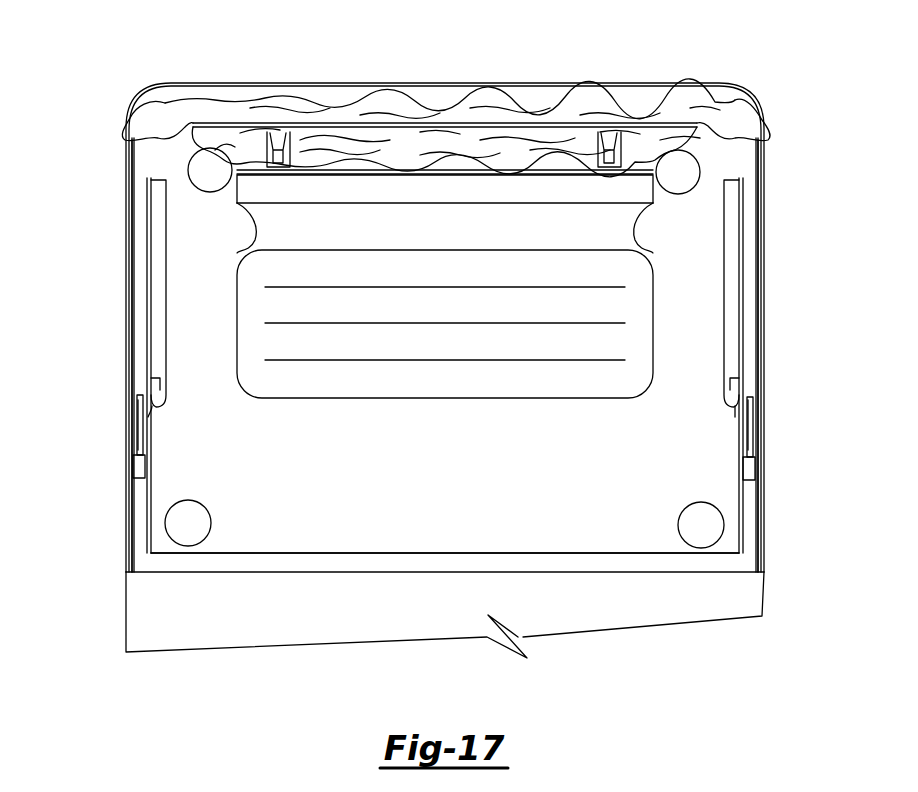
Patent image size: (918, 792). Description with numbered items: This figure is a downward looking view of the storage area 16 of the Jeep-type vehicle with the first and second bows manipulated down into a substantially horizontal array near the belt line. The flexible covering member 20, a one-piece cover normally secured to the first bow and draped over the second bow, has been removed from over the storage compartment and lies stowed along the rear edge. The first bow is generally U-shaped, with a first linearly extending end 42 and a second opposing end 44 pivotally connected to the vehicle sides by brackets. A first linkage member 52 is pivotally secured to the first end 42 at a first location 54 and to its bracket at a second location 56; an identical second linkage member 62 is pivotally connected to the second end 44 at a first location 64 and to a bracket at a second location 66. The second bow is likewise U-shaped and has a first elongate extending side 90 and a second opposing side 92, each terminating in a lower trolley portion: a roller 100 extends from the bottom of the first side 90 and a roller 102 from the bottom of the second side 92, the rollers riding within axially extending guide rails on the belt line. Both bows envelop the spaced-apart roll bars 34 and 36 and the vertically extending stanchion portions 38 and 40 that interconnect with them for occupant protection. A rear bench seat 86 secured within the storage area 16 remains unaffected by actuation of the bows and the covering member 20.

The flexible covering member 20 is at (392, 108).
The storage area 16 is at (426, 467).
The roll bar 34 is at (692, 180).
The roll bar 36 is at (194, 182).
The stanchion portion 38 is at (688, 520).
The stanchion portion 40 is at (198, 518).
The first linearly extending end 42 is at (748, 318).
The second linearly extending end 44 is at (140, 296).
The first linkage member 52 is at (747, 448).
The first location 54 is at (753, 398).
The second location 56 is at (755, 472).
The second linkage member 62 is at (143, 437).
The first location 64 is at (136, 407).
The second location 66 is at (126, 518).
The rear bench seat 86 is at (425, 314).
The first elongate extending side 90 is at (723, 307).
The second elongate extending side 92 is at (167, 314).
The roller 100 is at (735, 417).
The roller 102 is at (148, 417).